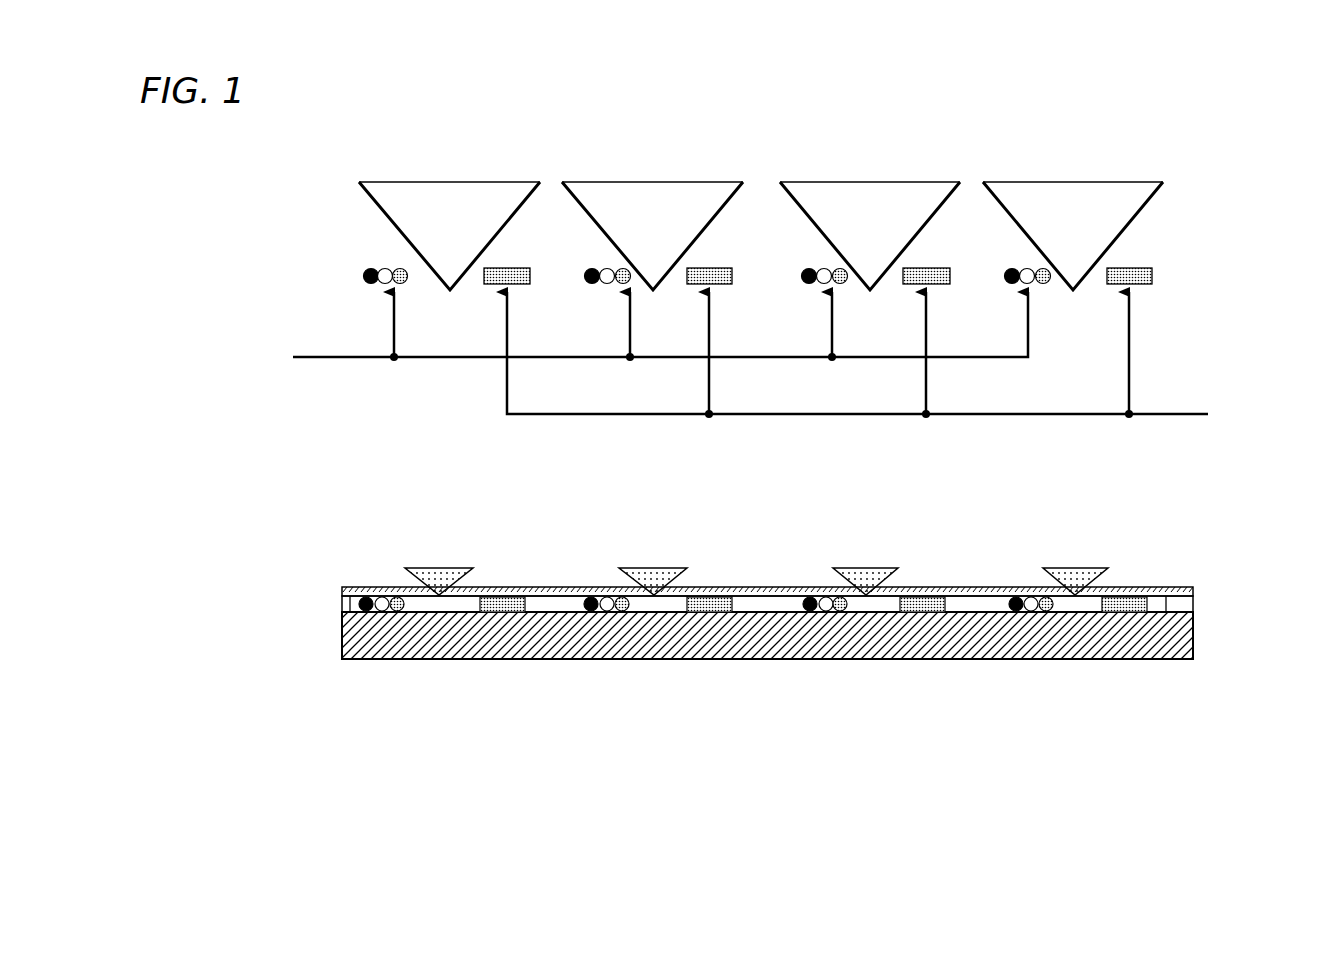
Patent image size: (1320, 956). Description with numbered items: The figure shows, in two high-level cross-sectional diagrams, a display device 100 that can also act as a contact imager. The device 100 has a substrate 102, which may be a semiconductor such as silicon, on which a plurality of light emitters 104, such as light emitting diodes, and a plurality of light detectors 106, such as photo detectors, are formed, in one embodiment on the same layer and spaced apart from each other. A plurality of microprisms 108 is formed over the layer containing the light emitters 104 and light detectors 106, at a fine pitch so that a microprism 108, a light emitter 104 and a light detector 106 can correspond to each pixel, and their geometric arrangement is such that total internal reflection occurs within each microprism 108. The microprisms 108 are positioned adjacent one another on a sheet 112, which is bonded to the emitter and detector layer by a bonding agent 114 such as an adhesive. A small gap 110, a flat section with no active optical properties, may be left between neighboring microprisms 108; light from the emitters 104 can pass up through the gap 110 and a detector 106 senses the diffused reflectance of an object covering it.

The display device 100 is at (222, 157).
The substrate 102 is at (342, 636).
The light emitters 104 is at (352, 357).
The light detectors 106 is at (1180, 414).
The microprisms 108 is at (641, 200).
The gap 110 is at (764, 200).
The sheet 112 is at (504, 587).
The bonding agent 114 is at (1195, 609).